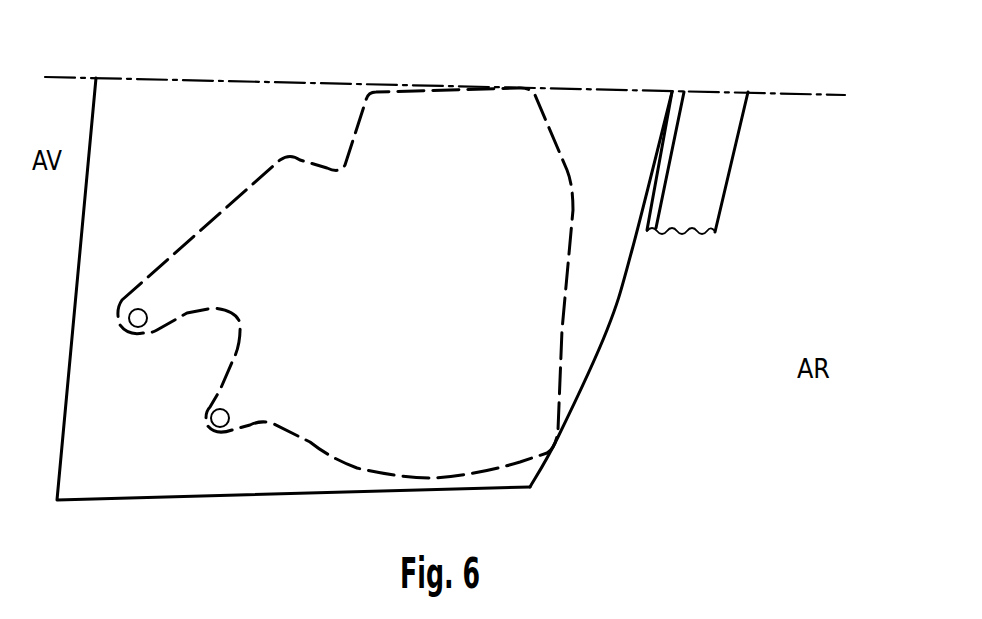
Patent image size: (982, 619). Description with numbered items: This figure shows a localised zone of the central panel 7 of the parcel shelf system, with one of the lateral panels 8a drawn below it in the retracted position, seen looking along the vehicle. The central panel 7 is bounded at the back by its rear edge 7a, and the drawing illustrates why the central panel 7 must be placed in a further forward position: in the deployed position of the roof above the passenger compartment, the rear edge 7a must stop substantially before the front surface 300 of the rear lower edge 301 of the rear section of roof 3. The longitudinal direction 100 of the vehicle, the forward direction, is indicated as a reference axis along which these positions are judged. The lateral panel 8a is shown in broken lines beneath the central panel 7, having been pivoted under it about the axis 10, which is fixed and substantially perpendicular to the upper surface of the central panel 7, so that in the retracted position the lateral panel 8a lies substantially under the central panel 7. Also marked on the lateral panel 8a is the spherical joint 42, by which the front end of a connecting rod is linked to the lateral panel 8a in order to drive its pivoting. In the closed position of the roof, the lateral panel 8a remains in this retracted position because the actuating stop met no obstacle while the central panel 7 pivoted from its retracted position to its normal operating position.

The longitudinal direction 100 is at (790, 94).
The central panel 7 is at (405, 289).
The rear edge 7a is at (632, 257).
The section of rear roof 3 is at (727, 151).
The front surface 300 is at (667, 145).
The rear lower edge 301 is at (710, 120).
The lateral panel 8a is at (350, 428).
The axis 10 is at (123, 333).
The spherical joint 42 is at (224, 427).